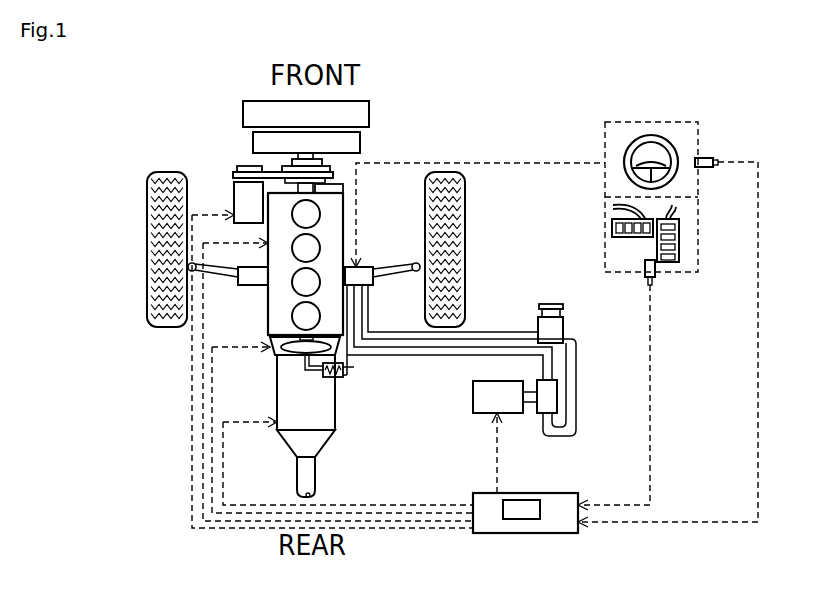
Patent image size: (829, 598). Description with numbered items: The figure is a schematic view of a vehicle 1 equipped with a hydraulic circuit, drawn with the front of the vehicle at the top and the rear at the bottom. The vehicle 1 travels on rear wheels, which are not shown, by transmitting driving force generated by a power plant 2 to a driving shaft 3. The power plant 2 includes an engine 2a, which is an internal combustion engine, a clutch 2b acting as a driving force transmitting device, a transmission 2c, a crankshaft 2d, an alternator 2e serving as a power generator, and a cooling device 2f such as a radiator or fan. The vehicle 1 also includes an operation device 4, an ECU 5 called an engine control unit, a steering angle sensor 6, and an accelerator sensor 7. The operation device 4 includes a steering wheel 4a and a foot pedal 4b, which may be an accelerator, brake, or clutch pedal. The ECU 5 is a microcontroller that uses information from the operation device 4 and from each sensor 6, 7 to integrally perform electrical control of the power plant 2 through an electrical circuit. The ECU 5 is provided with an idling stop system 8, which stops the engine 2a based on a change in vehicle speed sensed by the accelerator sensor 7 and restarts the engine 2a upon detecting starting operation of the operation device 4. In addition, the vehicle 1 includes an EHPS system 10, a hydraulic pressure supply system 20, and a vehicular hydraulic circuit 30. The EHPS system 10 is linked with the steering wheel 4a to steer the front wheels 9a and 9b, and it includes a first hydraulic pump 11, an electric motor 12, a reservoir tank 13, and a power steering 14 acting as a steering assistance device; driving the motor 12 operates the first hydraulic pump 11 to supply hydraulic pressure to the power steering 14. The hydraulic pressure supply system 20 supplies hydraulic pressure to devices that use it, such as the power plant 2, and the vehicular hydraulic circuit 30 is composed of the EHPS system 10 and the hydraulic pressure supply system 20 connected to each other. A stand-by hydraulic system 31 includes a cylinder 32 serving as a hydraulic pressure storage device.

The vehicle 1 is at (190, 147).
The power plant 2 is at (258, 312).
The engine 2a is at (333, 212).
The clutch 2b is at (273, 353).
The transmission 2c is at (283, 403).
The crankshaft 2d is at (332, 180).
The alternator 2e is at (237, 193).
The cooling device 2f is at (255, 142).
The driving shaft 3 is at (297, 470).
The operation device 4 is at (598, 147).
The steering wheel 4a is at (653, 140).
The foot pedal 4b is at (680, 233).
The ECU 5 is at (560, 500).
The steering angle sensor 6 is at (713, 160).
The accelerator sensor 7 is at (655, 282).
The idling stop system 8 is at (530, 510).
The front wheel 9a is at (147, 208).
The front wheel 9b is at (465, 208).
The EHPS system 10 is at (477, 333).
The first hydraulic pump 11 is at (557, 400).
The motor 12 is at (473, 395).
The reservoir tank 13 is at (558, 323).
The power steering 14 is at (250, 279).
The hydraulic pressure supply system 20 is at (313, 390).
The vehicular hydraulic circuit 30 is at (522, 249).
The stand-by hydraulic system 31 is at (361, 372).
The cylinder 32 is at (343, 378).